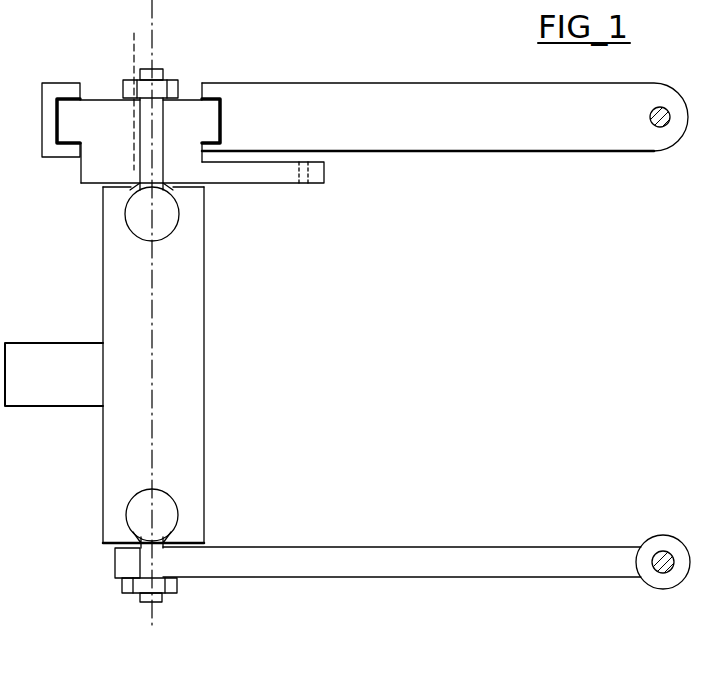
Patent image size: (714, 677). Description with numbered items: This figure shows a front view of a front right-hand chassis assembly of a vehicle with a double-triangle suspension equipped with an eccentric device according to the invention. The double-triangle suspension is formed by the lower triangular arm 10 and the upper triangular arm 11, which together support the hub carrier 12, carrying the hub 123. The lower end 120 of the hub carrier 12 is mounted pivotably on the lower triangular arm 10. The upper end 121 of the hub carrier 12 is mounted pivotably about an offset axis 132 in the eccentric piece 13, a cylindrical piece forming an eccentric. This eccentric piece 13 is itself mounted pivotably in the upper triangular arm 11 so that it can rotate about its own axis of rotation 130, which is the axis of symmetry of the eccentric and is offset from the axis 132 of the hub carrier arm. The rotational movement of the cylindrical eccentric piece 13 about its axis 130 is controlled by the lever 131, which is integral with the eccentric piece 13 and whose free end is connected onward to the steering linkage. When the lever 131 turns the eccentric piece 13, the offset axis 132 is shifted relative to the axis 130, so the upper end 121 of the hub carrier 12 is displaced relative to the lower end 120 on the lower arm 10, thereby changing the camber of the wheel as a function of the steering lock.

The lower triangular arm 10 is at (457, 560).
The upper triangular arm 11 is at (492, 137).
The hub carrier 12 is at (188, 448).
The eccentric piece 13 is at (93, 168).
The lower end of the hub carrier 120 is at (157, 560).
The upper end of the hub carrier 121 is at (160, 124).
The hub 123 is at (43, 392).
The axis of rotation of the eccentric piece 130 is at (134, 58).
The lever 131 is at (262, 175).
The offset axis 132 is at (153, 22).